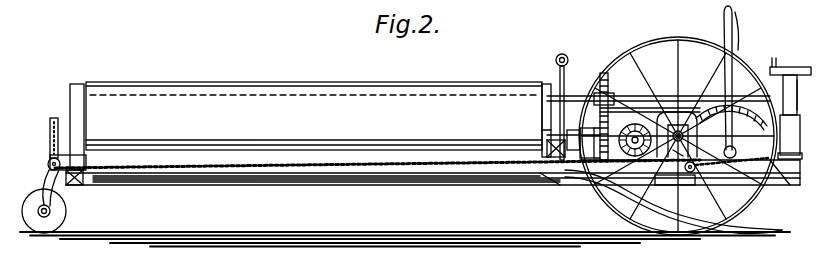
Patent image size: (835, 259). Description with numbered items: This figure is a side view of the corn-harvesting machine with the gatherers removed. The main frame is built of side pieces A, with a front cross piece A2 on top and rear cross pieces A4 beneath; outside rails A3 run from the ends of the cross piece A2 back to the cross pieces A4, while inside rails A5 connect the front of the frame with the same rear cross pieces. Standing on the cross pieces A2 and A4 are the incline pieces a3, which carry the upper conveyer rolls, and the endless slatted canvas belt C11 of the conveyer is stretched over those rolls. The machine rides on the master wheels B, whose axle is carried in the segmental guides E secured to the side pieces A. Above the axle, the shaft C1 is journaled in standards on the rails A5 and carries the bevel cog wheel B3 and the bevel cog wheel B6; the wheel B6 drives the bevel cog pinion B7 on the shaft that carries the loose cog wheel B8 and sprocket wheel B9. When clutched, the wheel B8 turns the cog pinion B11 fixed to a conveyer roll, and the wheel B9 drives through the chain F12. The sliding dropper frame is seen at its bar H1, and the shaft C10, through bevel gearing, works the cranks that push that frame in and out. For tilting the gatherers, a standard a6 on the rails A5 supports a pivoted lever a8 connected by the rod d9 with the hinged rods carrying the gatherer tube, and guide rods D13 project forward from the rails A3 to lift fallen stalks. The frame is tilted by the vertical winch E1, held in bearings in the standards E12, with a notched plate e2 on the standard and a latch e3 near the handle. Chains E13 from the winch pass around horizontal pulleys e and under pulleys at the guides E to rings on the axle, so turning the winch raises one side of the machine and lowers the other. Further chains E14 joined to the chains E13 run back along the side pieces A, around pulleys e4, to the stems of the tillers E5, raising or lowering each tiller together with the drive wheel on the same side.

The endless canvas belts C11 is at (314, 116).
The incline pieces a3 is at (540, 96).
The shaft C10 is at (545, 133).
The side pieces A is at (800, 172).
The outside rails A3 is at (180, 184).
The inside rails A5 is at (234, 186).
The bar H1 is at (358, 185).
The front cross piece A2 is at (536, 186).
The rear cross pieces A4 is at (75, 186).
The chains E14 is at (450, 168).
The pulleys e4 is at (49, 163).
The tillers E5 is at (66, 214).
The master wheels B is at (678, 123).
The bevel cog wheel B6 is at (645, 130).
The rod d9 is at (566, 100).
The cog pinion B11 is at (603, 72).
The chain F12 is at (607, 93).
The bevel cog wheel B3 is at (633, 124).
The segmental guides E is at (680, 112).
The sprocket wheel B9 is at (573, 133).
The cog wheel B8 is at (584, 162).
The bevel cog pinion B7 is at (608, 164).
The hand lever a8 is at (736, 40).
The standard a6 is at (731, 119).
The standards E12 is at (798, 112).
The winch E1 is at (800, 72).
The latch e3 is at (783, 57).
The notched plate e2 is at (808, 95).
The horizontal pulleys e is at (800, 155).
The chains E13 is at (775, 164).
The shaft C1 is at (684, 167).
The guide rods D13 is at (673, 202).